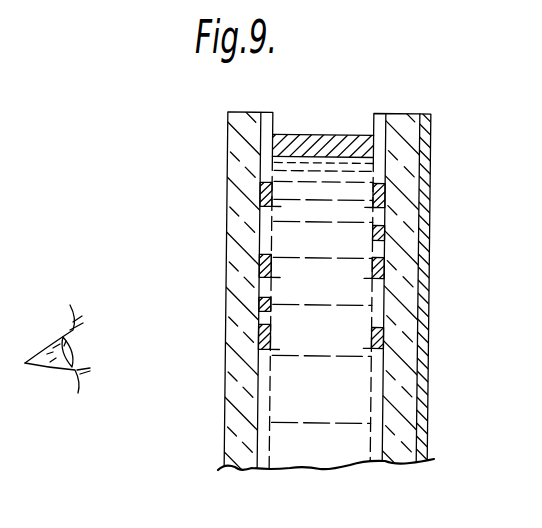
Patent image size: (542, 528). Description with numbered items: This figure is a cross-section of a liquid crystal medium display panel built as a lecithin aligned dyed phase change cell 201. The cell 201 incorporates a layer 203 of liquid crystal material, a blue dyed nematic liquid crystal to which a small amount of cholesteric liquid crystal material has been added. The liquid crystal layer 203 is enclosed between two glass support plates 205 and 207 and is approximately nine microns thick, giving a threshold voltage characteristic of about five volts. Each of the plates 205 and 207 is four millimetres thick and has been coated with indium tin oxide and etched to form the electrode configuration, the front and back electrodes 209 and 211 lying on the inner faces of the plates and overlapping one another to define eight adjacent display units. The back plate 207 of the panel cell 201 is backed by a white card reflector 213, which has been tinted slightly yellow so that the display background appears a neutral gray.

The phase change cell 201 is at (456, 120).
The layer of liquid crystal material 203 is at (337, 290).
The glass support plate 205 is at (232, 330).
The glass support plate 207 is at (413, 303).
The front electrodes 209 is at (262, 462).
The back electrodes 211 is at (378, 455).
The white card reflector 213 is at (422, 417).